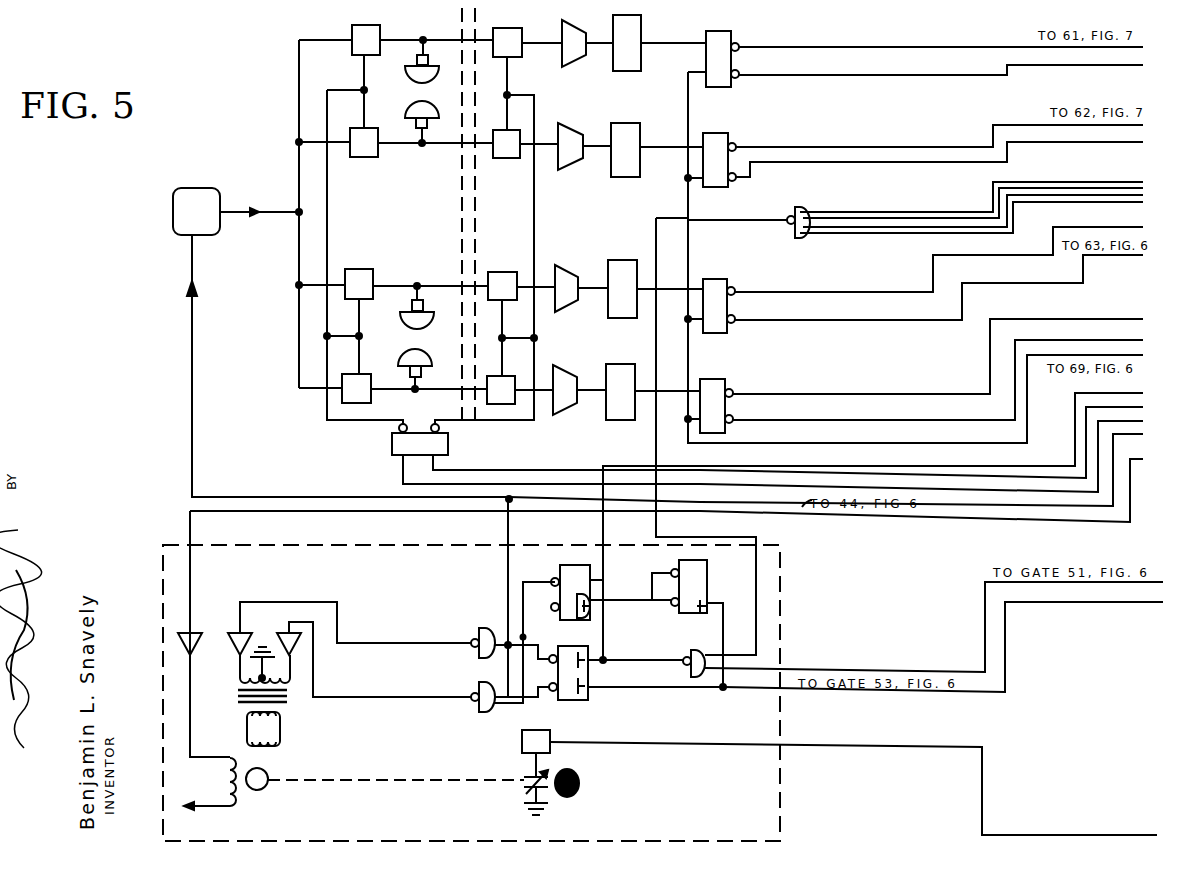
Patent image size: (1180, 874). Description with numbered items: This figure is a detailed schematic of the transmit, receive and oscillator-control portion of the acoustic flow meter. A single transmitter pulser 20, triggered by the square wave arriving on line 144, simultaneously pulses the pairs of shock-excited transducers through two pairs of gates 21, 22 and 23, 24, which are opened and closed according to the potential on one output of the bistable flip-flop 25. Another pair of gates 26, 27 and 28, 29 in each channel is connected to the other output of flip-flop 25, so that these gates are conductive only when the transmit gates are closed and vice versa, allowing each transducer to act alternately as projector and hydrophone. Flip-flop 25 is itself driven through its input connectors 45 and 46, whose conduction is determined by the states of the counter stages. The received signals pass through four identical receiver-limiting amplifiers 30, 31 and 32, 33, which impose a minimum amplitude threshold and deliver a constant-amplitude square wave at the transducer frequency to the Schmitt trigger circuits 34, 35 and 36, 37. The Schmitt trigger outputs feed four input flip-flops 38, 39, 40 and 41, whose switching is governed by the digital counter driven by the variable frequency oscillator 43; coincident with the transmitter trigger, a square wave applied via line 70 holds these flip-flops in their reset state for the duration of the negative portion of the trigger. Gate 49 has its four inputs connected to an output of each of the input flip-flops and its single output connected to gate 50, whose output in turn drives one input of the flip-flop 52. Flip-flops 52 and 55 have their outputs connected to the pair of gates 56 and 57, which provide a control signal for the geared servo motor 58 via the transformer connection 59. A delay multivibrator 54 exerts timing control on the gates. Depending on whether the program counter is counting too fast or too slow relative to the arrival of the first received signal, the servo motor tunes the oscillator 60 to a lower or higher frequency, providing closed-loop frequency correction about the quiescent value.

The transmitter pulser 20 is at (206, 220).
The gate 21 is at (370, 31).
The gate 22 is at (368, 128).
The gate 23 is at (362, 267).
The gate 24 is at (362, 373).
The bistable flip-flop 25 is at (430, 452).
The gate 26 is at (507, 33).
The gate 27 is at (507, 136).
The gate 28 is at (500, 270).
The gate 29 is at (507, 376).
The receiver-limiting amplifier 30 is at (571, 34).
The receiver-limiting amplifier 31 is at (567, 136).
The receiver-limiting amplifier 32 is at (560, 265).
The receiver-limiting amplifier 33 is at (562, 367).
The Schmitt trigger circuit 34 is at (633, 36).
The Schmitt trigger circuit 35 is at (625, 132).
The Schmitt trigger circuit 36 is at (625, 263).
The Schmitt trigger circuit 37 is at (620, 368).
The input flip-flop 38 is at (723, 41).
The input flip-flop 39 is at (712, 139).
The input flip-flop 40 is at (715, 282).
The input flip-flop 41 is at (708, 383).
The variable frequency oscillator 43 is at (164, 556).
The input connector 45 is at (433, 466).
The input connector 46 is at (405, 465).
The gate 49 is at (803, 208).
The gate 50 is at (692, 652).
The flip-flop 52 is at (558, 652).
The delay multivibrator 54 is at (708, 566).
The flip-flop 55 is at (556, 575).
The gate 56 is at (485, 628).
The gate 57 is at (475, 682).
The geared servo motor 58 is at (264, 775).
The transformer connection 59 is at (238, 692).
The oscillator 60 is at (522, 741).
The line 70 is at (687, 371).
The line 144 is at (330, 490).